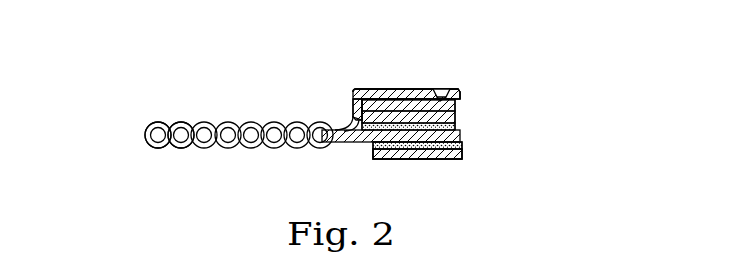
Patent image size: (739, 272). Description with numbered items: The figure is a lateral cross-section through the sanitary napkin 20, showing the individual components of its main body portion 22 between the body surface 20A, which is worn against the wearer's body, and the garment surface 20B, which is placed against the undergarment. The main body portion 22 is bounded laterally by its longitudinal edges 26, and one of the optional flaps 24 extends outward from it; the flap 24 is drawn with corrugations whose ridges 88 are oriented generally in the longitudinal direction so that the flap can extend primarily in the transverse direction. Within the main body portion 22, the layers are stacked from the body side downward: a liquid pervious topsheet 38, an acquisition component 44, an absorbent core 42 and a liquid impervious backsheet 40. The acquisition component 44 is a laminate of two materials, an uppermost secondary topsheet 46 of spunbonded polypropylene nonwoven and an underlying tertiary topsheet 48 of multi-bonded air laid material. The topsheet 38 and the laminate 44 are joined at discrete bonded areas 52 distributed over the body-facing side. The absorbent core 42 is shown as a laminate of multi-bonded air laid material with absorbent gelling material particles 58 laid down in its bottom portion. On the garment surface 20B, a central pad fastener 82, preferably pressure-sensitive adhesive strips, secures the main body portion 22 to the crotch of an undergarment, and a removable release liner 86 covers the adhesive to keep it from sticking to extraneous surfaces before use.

The sanitary napkin 20 is at (419, 59).
The body surface 20A is at (348, 79).
The garment surface 20B is at (358, 151).
The main body portion 22 is at (387, 79).
The flaps 24 is at (230, 113).
The longitudinal edges 26 is at (322, 146).
The liquid pervious topsheet 38 is at (456, 94).
The liquid impervious backsheet 40 is at (338, 144).
The absorbent core 42 is at (462, 110).
The acquisition component 44 is at (463, 104).
The secondary topsheet 46 is at (352, 98).
The tertiary topsheet 48 is at (355, 113).
The bonded areas 52 is at (441, 92).
The absorbent gelling material particles 58 is at (462, 131).
The central pad fastener 82 is at (462, 148).
The release liners 86 is at (406, 159).
The ridges 88 is at (197, 123).